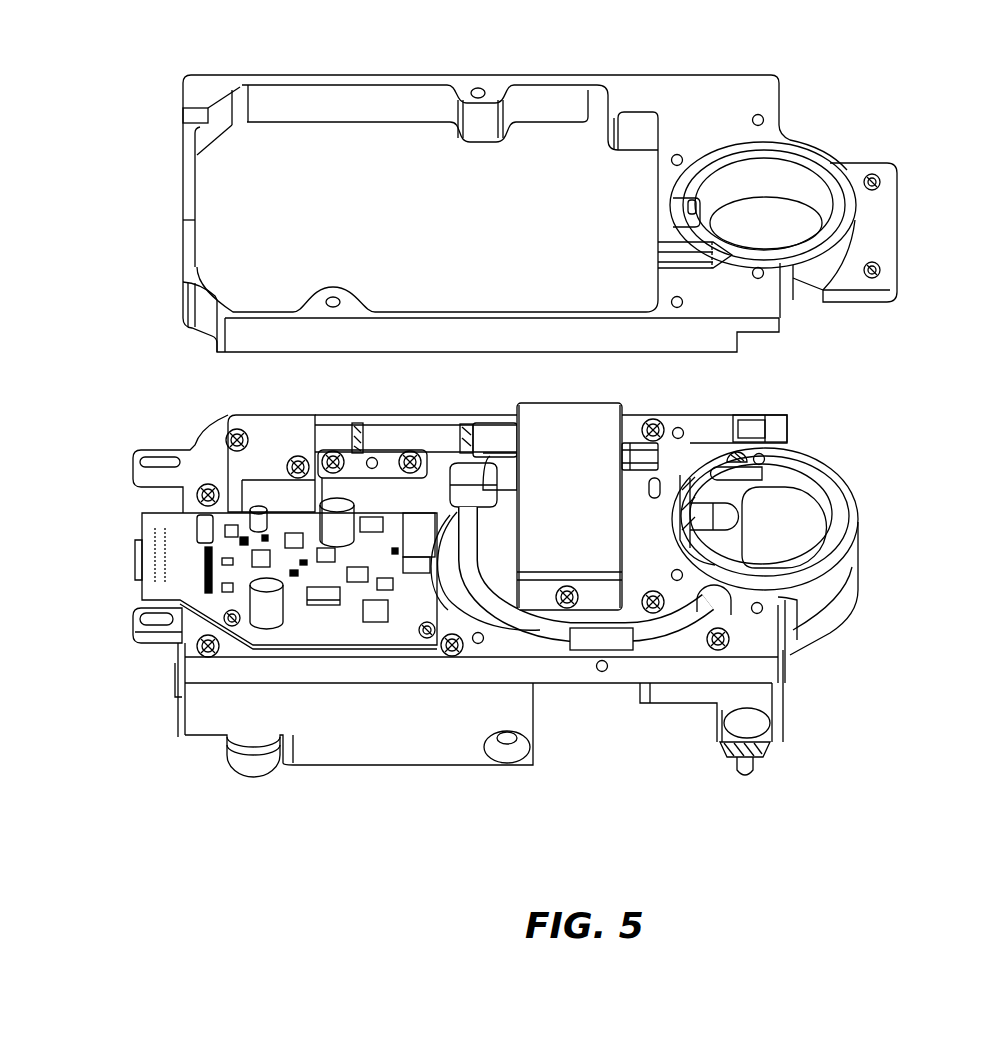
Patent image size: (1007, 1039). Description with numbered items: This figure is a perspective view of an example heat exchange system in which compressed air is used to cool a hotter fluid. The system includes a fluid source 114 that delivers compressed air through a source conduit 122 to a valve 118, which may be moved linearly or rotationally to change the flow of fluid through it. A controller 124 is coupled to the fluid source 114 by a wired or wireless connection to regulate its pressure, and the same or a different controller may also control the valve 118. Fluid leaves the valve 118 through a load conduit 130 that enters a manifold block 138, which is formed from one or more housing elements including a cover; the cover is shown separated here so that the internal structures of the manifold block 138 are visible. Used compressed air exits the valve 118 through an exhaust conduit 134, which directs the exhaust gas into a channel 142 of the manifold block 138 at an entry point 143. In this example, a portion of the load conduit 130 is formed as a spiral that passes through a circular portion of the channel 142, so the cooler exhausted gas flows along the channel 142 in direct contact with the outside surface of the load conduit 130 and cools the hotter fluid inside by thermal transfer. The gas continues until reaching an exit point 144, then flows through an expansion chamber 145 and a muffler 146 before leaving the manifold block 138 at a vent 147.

The fluid source 114 is at (278, 442).
The valve 118 is at (565, 503).
The source conduit 122 is at (422, 443).
The controller 124 is at (357, 613).
The load conduit 130 is at (832, 491).
The exhaust conduit 134 is at (472, 565).
The manifold block 138 is at (720, 105).
The channel 142 is at (833, 215).
The entry point 143 is at (720, 475).
The exit point 144 is at (690, 220).
The expansion chamber 145 is at (760, 223).
The muffler 146 is at (775, 522).
The vent 147 is at (747, 775).